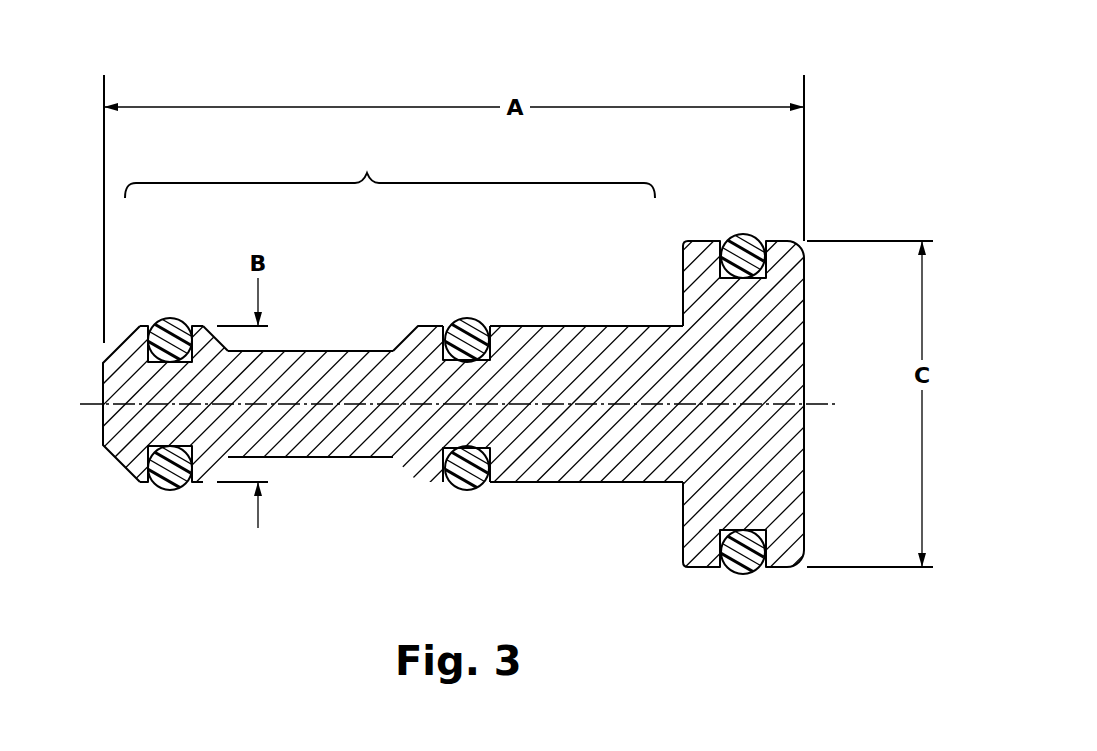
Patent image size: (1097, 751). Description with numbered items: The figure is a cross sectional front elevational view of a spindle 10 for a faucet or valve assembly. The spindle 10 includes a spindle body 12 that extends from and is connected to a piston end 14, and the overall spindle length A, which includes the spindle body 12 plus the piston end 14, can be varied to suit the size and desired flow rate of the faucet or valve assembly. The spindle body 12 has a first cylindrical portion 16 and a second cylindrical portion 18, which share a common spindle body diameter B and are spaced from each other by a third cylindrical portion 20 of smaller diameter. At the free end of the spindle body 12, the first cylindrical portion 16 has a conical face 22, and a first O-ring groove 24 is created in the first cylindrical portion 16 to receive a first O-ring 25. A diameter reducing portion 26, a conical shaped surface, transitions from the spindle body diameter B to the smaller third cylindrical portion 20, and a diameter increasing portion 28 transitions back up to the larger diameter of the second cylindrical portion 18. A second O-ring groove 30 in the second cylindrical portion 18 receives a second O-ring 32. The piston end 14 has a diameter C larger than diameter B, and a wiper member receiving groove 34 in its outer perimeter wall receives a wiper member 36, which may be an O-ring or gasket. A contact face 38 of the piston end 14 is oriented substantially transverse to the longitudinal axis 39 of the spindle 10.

The spindle 10 is at (707, 78).
The spindle body 12 is at (390, 173).
The piston end 14 is at (694, 280).
The first cylindrical portion 16 is at (119, 455).
The second cylindrical portion 18 is at (570, 484).
The third cylindrical portion 20 is at (287, 459).
The conical face 22 is at (132, 322).
The first O-ring groove 24 is at (158, 491).
The first O-ring 25 is at (183, 491).
The diameter reducing portion 26 is at (209, 318).
The diameter increasing portion 28 is at (407, 322).
The second O-ring groove 30 is at (456, 487).
The second O-ring 32 is at (470, 325).
The wiper member receiving groove 34 is at (728, 567).
The wiper member 36 is at (745, 236).
The contact face 38 is at (812, 455).
The longitudinal axis 39 is at (815, 403).